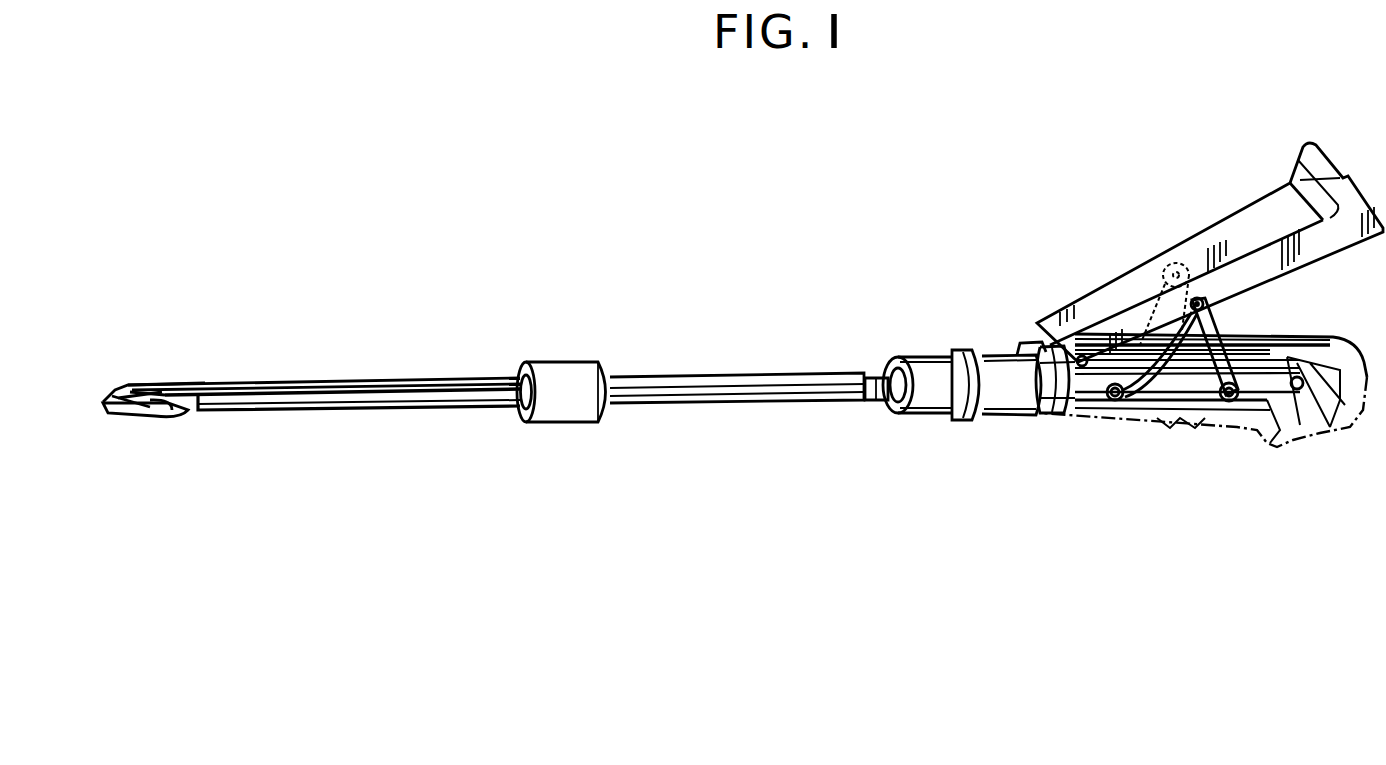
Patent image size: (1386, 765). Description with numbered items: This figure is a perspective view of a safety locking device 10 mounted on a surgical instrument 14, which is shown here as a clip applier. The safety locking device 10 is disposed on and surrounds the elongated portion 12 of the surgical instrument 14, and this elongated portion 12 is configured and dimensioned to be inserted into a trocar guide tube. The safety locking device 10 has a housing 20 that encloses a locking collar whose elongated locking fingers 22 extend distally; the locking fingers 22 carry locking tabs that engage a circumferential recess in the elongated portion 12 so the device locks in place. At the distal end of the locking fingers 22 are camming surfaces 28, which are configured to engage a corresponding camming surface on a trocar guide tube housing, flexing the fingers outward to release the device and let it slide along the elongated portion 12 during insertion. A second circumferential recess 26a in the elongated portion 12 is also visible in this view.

The safety locking device 10 is at (612, 306).
The elongated portion 12 is at (690, 376).
The surgical instrument 14 is at (1067, 266).
The housing 20 is at (594, 409).
The locking fingers 22 is at (509, 414).
The second circumferential recess 26a is at (868, 380).
The camming surface 28 is at (514, 374).